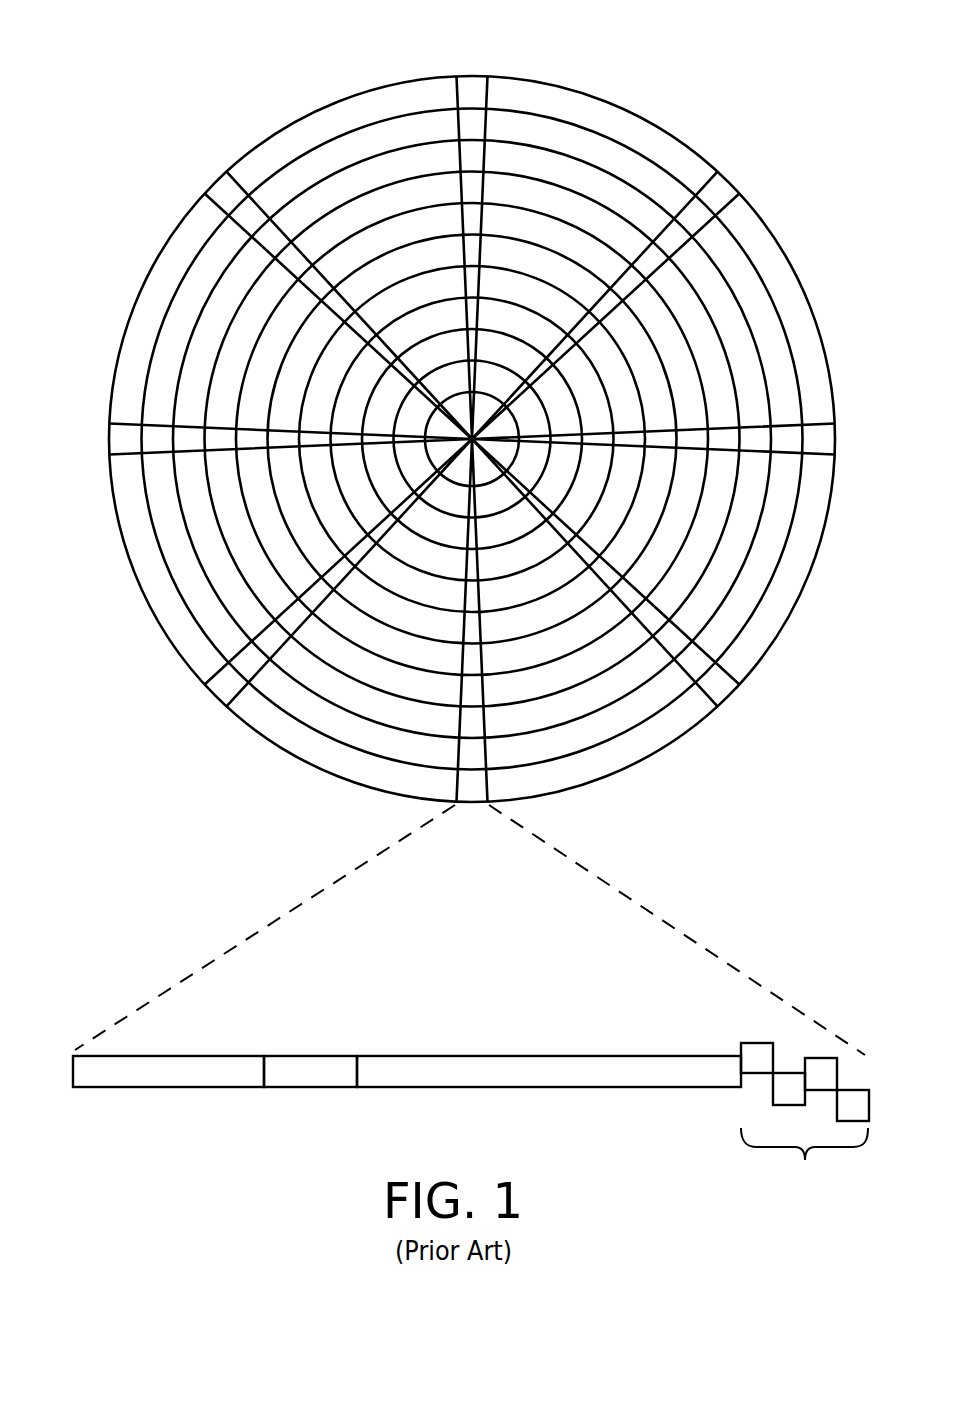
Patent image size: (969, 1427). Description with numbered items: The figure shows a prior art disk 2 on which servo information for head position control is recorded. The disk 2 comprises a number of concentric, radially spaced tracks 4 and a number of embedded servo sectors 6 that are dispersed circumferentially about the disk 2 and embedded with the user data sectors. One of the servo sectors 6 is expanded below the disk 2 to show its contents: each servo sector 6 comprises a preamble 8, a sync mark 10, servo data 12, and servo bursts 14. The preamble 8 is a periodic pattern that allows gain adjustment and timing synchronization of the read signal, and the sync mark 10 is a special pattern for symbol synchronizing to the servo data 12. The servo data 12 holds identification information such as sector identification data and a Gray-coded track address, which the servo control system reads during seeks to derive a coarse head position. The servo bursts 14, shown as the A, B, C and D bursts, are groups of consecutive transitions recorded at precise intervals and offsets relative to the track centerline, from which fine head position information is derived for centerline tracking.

The disk 2 is at (205, 81).
The concentric tracks 4 is at (621, 128).
The embedded servo sectors 6 is at (473, 87).
The preamble 8 is at (146, 1089).
The sync mark 10 is at (308, 1089).
The servo data 12 is at (538, 1089).
The servo bursts 14 is at (728, 1021).